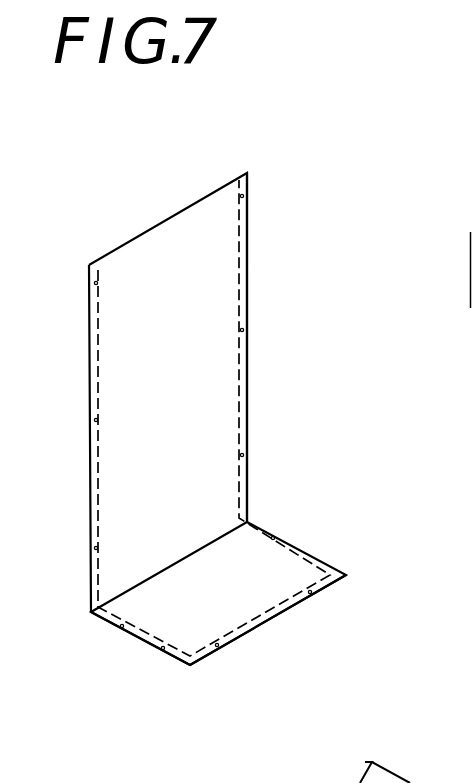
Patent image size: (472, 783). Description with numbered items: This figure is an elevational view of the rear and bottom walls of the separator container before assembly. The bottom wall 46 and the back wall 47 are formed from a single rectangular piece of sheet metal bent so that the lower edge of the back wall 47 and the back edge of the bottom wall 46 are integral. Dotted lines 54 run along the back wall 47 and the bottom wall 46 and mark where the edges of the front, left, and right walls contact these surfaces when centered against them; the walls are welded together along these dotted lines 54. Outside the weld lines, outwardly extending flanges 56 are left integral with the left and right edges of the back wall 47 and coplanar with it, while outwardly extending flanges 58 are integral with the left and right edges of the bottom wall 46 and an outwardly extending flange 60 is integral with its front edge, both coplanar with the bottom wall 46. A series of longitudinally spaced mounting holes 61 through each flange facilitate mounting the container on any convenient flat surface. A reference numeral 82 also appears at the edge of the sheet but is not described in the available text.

The bottom wall 46 is at (232, 618).
The back wall 47 is at (247, 292).
The dotted lines 54 is at (98, 343).
The outwardly extending flanges 56 is at (89, 378).
The outwardly extending flanges 58 is at (126, 632).
The outwardly extending flange 60 is at (283, 613).
The mounting holes 61 is at (247, 190).
The partial element 82 is at (362, 782).